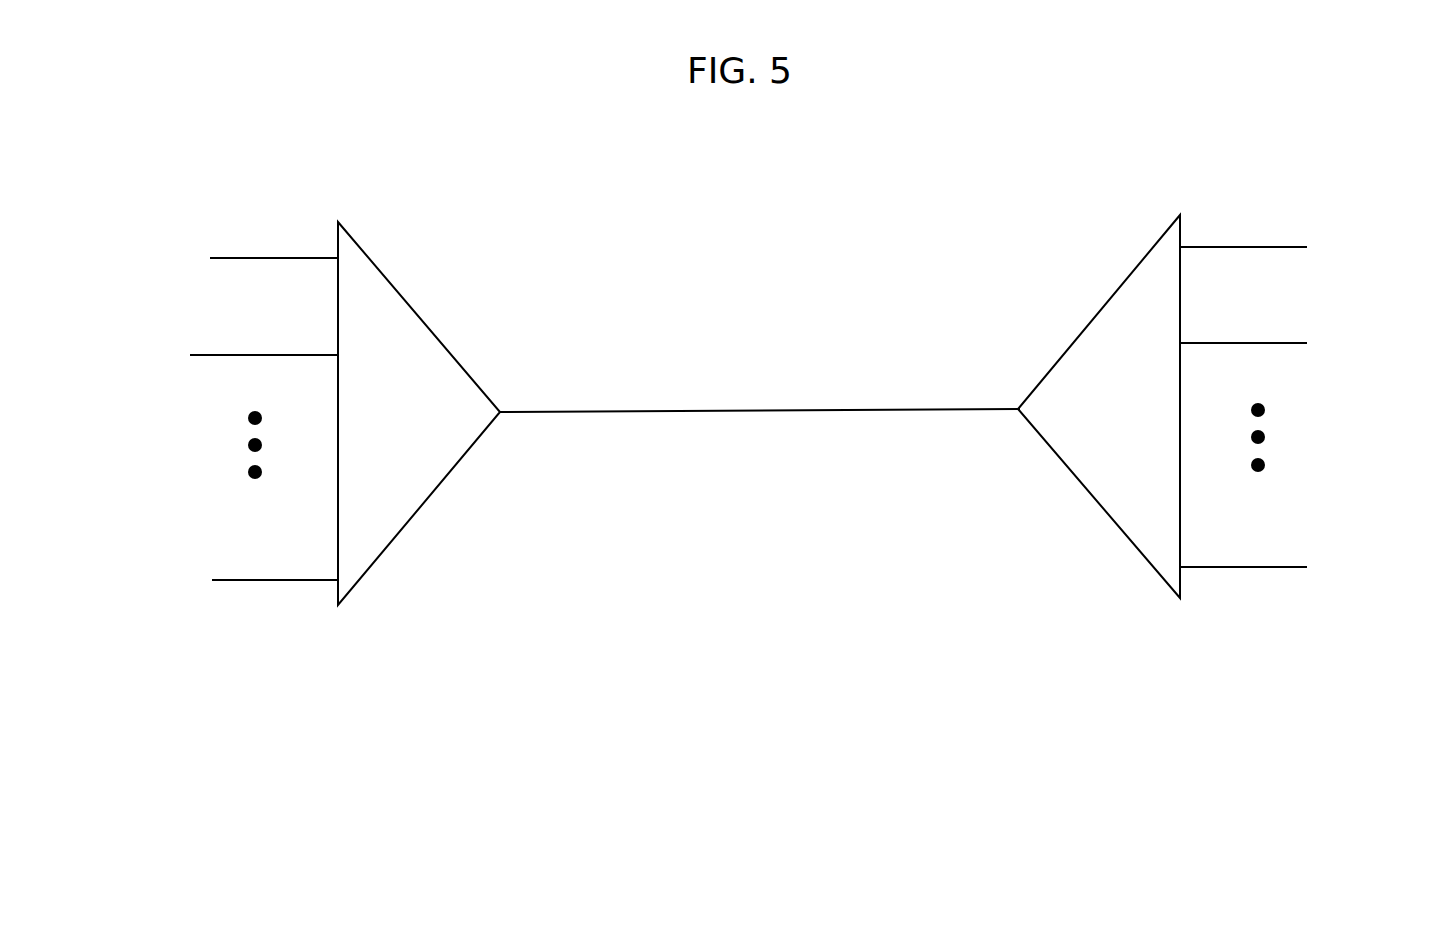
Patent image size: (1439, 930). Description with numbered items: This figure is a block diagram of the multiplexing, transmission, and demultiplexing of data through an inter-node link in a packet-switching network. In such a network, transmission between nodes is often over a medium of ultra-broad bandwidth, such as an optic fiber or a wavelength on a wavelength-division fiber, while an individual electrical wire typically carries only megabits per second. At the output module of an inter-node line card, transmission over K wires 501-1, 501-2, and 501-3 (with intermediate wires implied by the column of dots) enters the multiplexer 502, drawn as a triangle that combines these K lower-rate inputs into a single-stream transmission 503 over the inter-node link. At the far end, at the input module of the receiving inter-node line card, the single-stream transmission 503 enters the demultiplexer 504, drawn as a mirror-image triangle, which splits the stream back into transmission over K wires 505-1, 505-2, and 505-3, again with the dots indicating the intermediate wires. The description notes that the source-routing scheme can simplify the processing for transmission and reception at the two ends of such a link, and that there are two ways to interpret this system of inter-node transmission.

The wire 501-1 is at (257, 258).
The wire 501-2 is at (253, 355).
The wire 501-3 is at (253, 580).
The multiplexer 502 is at (405, 298).
The single-stream transmission 503 is at (748, 412).
The demultiplexer 504 is at (1135, 267).
The wire 505-1 is at (1277, 245).
The wire 505-2 is at (1277, 341).
The wire 505-3 is at (1277, 565).